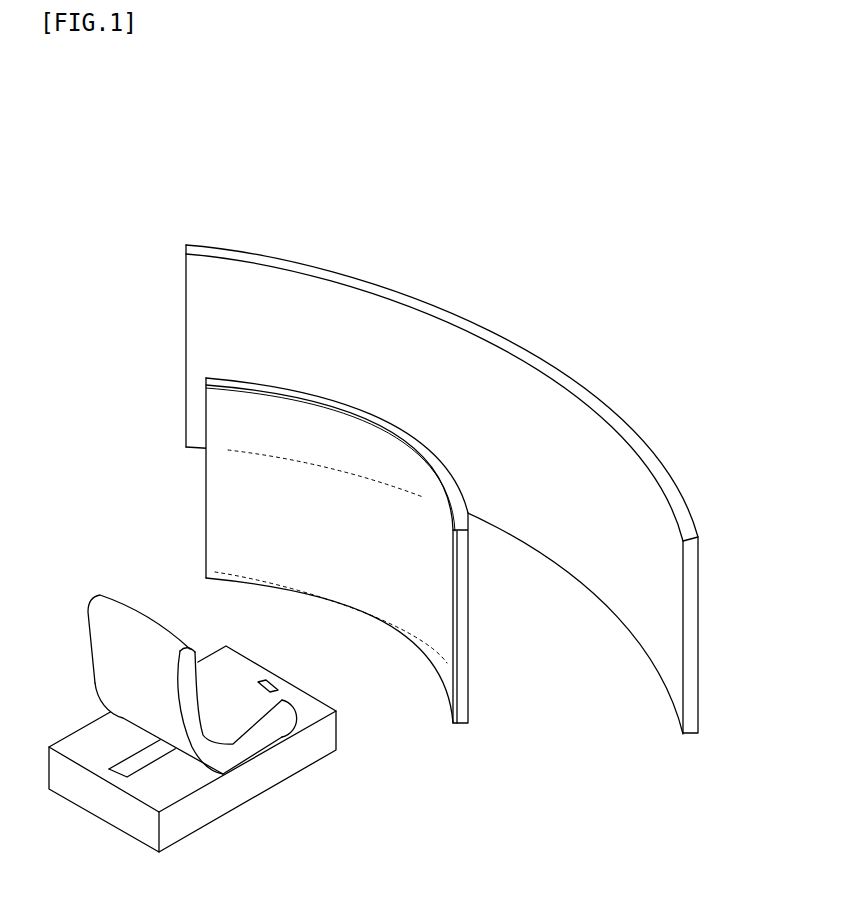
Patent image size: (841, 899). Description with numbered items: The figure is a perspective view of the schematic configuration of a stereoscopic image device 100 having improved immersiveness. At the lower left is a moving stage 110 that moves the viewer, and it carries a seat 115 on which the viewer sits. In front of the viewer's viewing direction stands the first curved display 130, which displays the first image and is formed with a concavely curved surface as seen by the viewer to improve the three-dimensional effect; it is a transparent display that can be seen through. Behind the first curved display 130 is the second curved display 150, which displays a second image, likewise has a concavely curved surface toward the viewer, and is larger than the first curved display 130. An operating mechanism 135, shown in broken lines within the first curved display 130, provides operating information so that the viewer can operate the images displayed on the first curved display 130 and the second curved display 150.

The stereoscopic image device 100 is at (240, 157).
The moving stage 110 is at (212, 806).
The seat 115 is at (247, 745).
The first curved display 130 is at (252, 378).
The operating mechanism 135 is at (233, 488).
The second curved display 150 is at (210, 285).